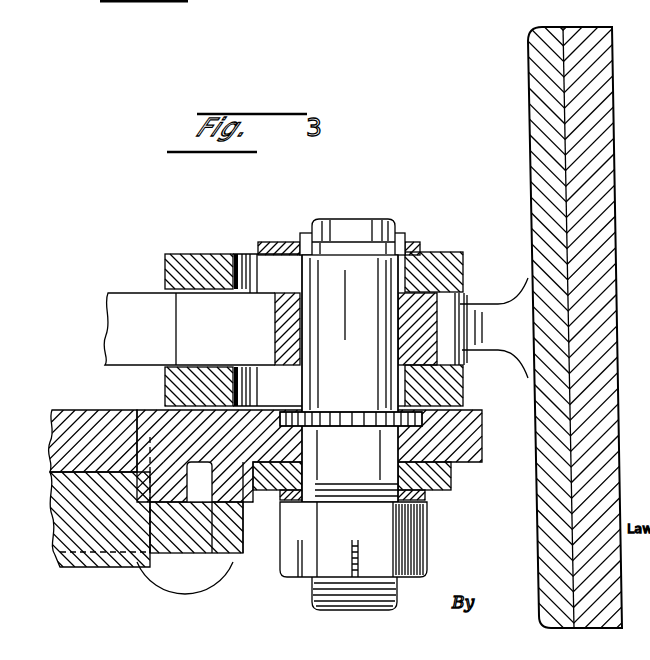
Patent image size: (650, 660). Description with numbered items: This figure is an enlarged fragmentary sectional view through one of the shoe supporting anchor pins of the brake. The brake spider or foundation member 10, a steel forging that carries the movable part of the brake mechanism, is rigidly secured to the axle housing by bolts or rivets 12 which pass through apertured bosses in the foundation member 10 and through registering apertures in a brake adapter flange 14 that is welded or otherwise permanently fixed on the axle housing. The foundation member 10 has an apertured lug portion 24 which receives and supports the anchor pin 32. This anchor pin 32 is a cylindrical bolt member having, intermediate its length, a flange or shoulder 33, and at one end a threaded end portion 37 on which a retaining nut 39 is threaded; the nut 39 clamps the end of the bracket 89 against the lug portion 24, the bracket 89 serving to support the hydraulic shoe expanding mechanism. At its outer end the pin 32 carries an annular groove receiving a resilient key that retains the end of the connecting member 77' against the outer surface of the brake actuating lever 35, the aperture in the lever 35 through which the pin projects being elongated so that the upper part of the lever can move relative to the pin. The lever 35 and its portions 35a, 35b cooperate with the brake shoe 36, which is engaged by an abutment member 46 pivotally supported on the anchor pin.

The brake shoe 36 is at (526, 65).
The brake spider or foundation member 10 is at (145, 406).
The apertured boss or lug 24 is at (478, 432).
The bracket 89 is at (452, 474).
The brake adapter flange 14 is at (102, 548).
The bolts or rivets 12 is at (198, 582).
The upper arm portion 35a is at (166, 278).
The lower arm portion 35b is at (176, 365).
The threaded end portion 37 is at (251, 292).
The brake actuating lever 35 is at (447, 247).
The abutment member 46 is at (435, 318).
The connecting member 77' is at (332, 232).
The anchor pin 32 is at (354, 218).
The flange or shoulder 33 is at (352, 410).
The retaining nut 39 is at (428, 527).